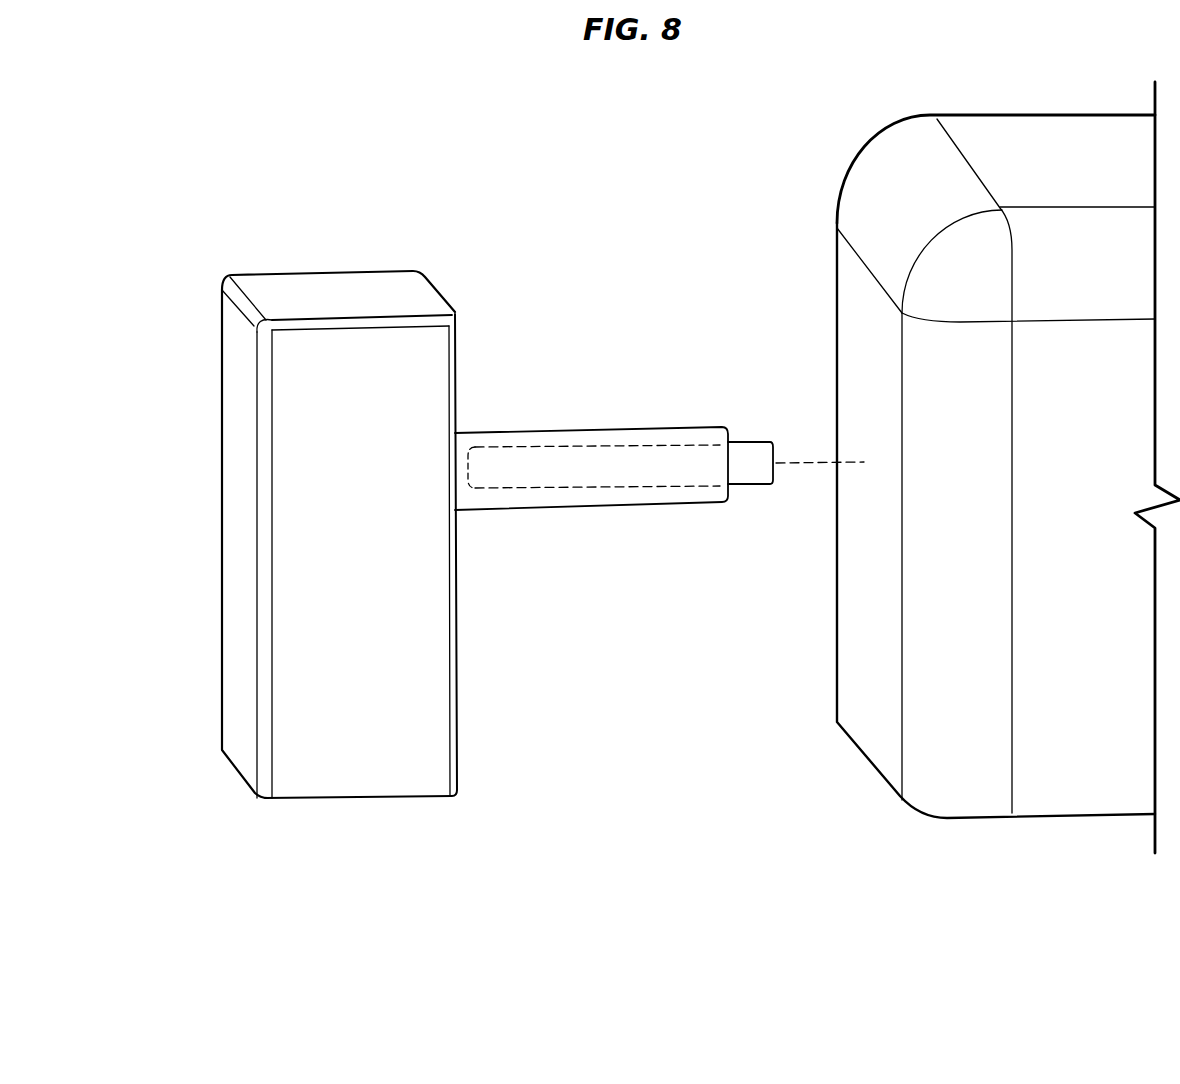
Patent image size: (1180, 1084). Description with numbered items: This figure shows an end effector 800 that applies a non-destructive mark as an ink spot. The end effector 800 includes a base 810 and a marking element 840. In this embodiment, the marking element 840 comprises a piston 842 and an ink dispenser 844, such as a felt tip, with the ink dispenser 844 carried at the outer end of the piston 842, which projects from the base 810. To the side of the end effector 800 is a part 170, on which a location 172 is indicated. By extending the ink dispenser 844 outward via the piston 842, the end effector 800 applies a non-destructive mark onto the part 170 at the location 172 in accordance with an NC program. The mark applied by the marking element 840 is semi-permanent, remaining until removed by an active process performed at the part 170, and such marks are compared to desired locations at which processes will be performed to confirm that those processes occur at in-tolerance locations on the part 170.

The end effector 800 is at (288, 183).
The base 810 is at (347, 272).
The marking element 840 is at (588, 538).
The piston 842 is at (609, 428).
The ink dispenser 844 is at (744, 441).
The part 170 is at (853, 168).
The location 172 is at (864, 462).